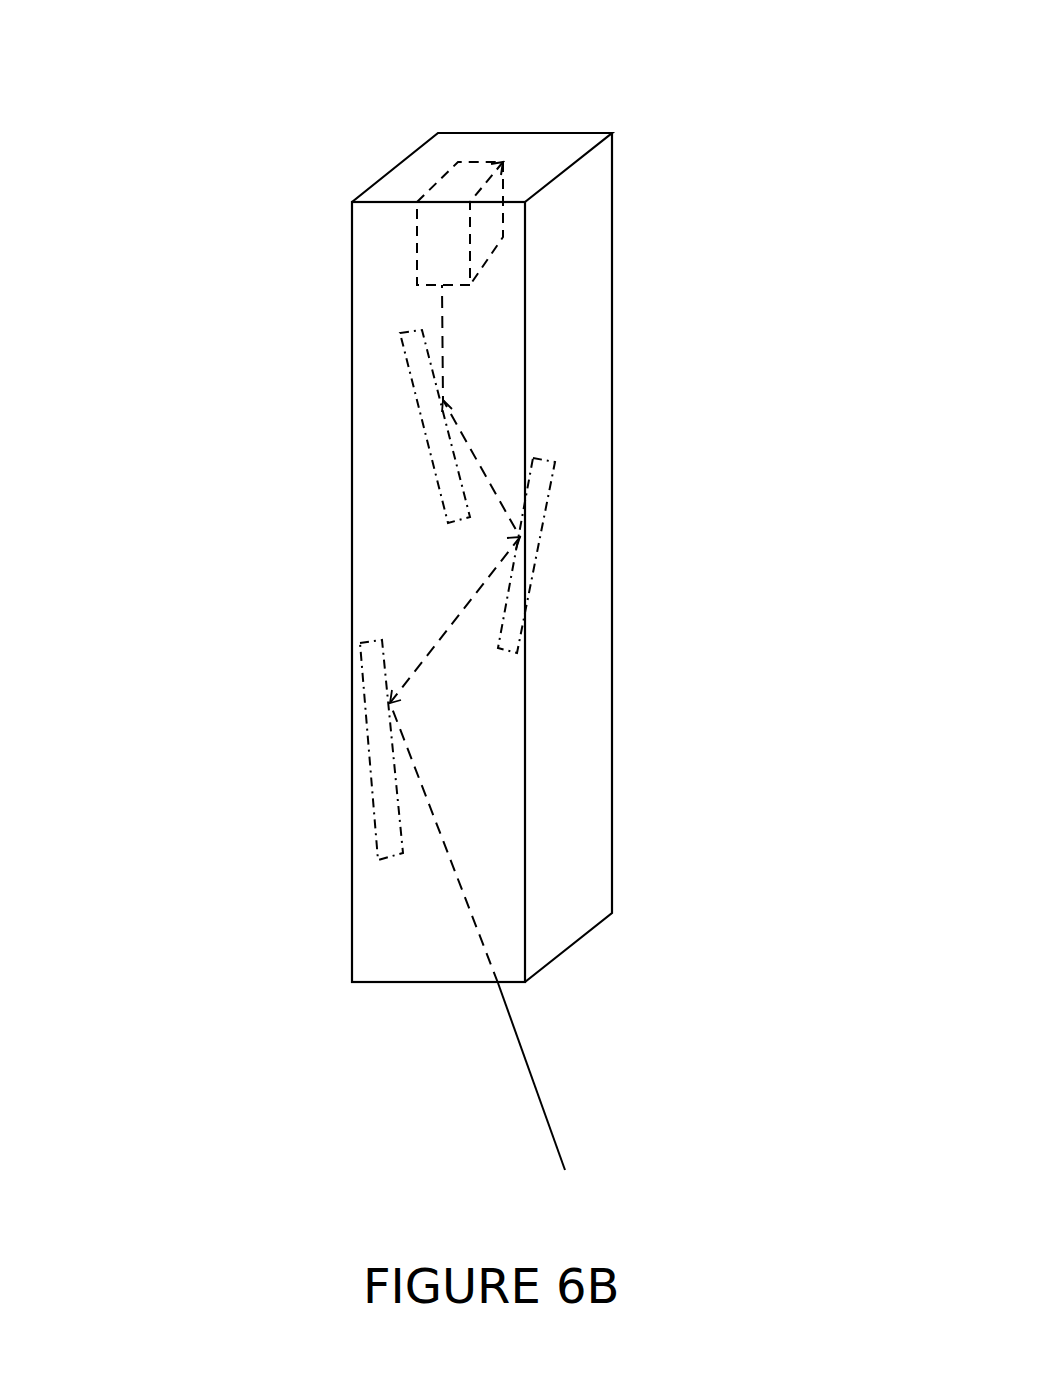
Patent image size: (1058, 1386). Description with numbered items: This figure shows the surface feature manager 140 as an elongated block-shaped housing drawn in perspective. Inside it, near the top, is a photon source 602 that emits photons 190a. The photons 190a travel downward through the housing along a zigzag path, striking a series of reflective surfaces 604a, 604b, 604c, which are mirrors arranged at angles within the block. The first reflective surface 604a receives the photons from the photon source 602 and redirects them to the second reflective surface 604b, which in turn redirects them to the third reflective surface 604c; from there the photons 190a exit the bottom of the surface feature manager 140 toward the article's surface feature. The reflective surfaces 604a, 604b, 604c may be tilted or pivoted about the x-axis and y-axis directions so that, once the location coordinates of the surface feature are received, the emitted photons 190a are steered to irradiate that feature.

The surface feature manager 140 is at (200, 168).
The photon source 602 is at (448, 248).
The photons 190a is at (449, 352).
The reflective surface 604a is at (423, 432).
The reflective surface 604b is at (517, 593).
The reflective surface 604c is at (377, 775).